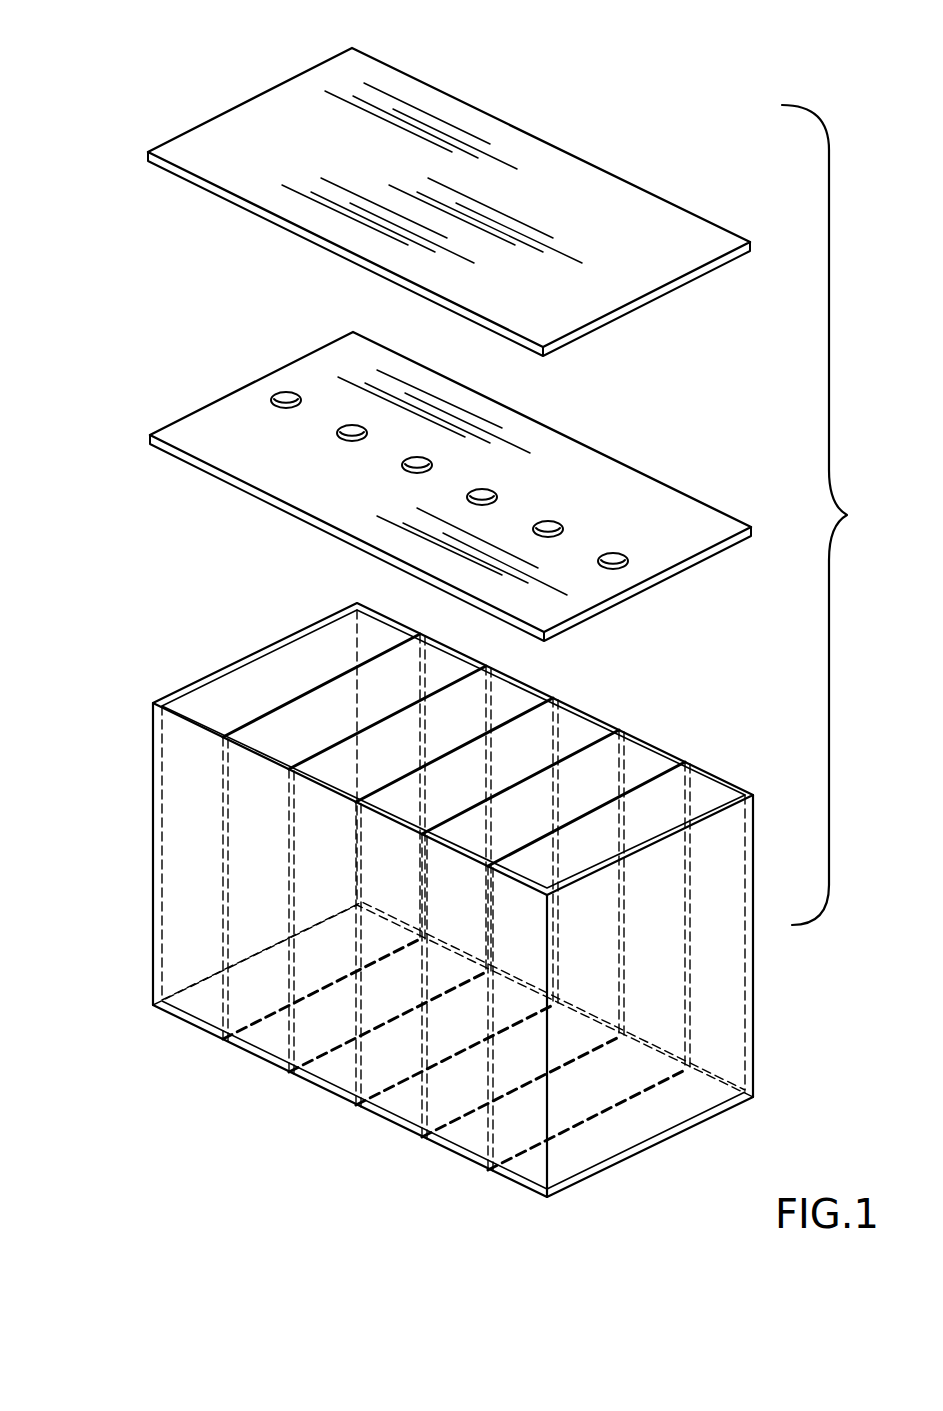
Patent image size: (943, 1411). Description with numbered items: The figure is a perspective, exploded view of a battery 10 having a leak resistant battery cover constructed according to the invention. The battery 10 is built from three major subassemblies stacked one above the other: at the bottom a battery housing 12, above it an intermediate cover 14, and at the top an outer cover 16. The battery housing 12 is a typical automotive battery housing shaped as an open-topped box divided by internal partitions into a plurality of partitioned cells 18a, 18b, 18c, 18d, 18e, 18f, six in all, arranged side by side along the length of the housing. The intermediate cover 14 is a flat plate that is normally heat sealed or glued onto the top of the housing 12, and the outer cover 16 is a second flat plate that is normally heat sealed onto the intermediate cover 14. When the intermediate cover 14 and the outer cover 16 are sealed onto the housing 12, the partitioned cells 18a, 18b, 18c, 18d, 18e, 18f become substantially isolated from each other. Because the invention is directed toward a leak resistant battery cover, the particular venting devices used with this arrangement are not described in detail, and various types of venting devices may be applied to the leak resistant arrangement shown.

The battery 10 is at (553, 115).
The battery housing 12 is at (402, 946).
The intermediate cover 14 is at (230, 390).
The outer cover 16 is at (252, 93).
The partitioned cell 18a is at (187, 1022).
The partitioned cell 18b is at (255, 1055).
The partitioned cell 18c is at (323, 1089).
The partitioned cell 18d is at (391, 1122).
The partitioned cell 18e is at (459, 1156).
The partitioned cell 18f is at (527, 1189).